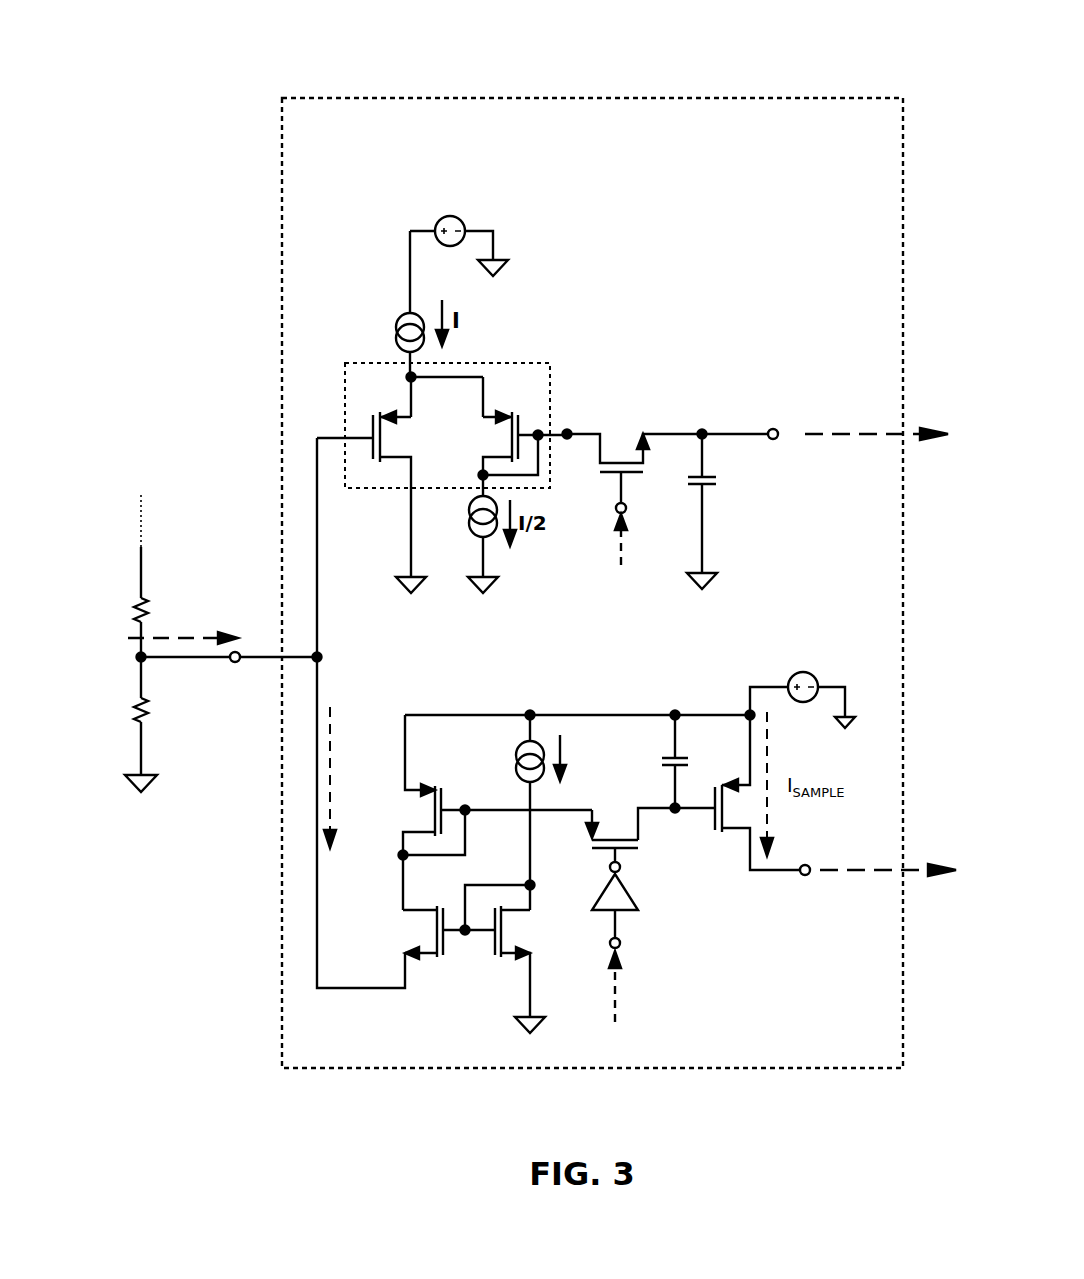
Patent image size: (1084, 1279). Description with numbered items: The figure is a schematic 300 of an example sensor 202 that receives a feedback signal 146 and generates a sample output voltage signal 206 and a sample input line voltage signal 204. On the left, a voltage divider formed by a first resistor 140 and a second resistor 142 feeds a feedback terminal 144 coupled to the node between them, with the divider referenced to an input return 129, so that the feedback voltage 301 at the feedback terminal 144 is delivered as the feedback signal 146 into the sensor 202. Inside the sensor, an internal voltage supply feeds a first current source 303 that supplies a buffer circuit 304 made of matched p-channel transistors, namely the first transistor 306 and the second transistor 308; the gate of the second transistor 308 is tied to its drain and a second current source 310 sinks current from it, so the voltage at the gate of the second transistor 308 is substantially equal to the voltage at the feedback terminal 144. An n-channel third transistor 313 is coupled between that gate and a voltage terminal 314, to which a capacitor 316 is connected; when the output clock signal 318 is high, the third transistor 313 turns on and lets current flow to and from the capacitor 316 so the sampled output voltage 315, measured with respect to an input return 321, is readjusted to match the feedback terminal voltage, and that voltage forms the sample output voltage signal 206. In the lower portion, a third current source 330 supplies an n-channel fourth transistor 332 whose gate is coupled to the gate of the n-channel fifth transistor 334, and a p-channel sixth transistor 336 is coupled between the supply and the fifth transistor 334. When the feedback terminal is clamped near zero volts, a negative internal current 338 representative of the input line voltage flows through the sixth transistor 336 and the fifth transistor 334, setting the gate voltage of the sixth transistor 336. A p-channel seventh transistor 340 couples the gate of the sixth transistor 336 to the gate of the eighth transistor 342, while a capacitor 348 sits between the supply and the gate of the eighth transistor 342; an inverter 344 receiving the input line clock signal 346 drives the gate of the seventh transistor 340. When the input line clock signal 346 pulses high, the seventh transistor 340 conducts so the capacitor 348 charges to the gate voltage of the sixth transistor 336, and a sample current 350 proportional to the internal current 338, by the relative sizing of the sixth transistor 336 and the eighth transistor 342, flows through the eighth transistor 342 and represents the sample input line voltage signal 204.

The schematic 300 is at (550, 23).
The sensor 202 is at (272, 173).
The first current source 303 is at (396, 320).
The buffer circuit 304 is at (552, 358).
The transistor T1 306 is at (378, 412).
The transistor T2 308 is at (507, 410).
The second current source 310 is at (495, 546).
The feedback voltage VFB 301 is at (597, 398).
The transistor T3 313 is at (643, 477).
The output clock signal CLKOUT 318 is at (612, 540).
The capacitor 316 is at (715, 490).
The input return 321 is at (705, 592).
The sampled output voltage VSAMPLE 315 is at (800, 400).
The voltage terminal 314 is at (775, 442).
The sample output voltage signal 206 is at (855, 440).
The first resistor 140 is at (133, 607).
The feedback signal 146 is at (185, 635).
The feedback terminal 144 is at (233, 668).
The second resistor 142 is at (120, 710).
The input return 129 is at (121, 795).
The internal current IINT 338 is at (336, 775).
The transistor T6 336 is at (441, 790).
The transistor T5 334 is at (404, 948).
The transistor T4 332 is at (491, 960).
The third current source 330 is at (545, 740).
The capacitor 348 is at (666, 752).
The transistor T7 340 is at (630, 850).
The inverter 344 is at (636, 915).
The input line clock signal CLKLINE 346 is at (606, 995).
The transistor T8 342 is at (746, 777).
The sample current ISAMPLE 350 is at (778, 820).
The sample input line voltage signal 204 is at (867, 880).